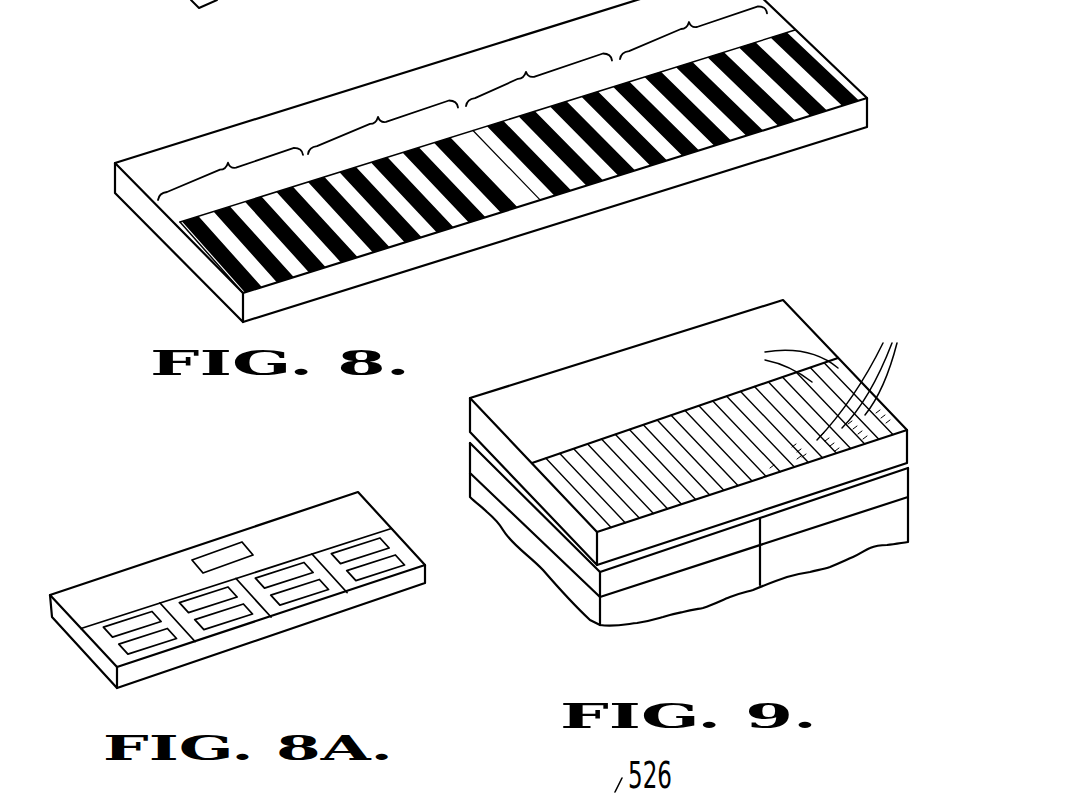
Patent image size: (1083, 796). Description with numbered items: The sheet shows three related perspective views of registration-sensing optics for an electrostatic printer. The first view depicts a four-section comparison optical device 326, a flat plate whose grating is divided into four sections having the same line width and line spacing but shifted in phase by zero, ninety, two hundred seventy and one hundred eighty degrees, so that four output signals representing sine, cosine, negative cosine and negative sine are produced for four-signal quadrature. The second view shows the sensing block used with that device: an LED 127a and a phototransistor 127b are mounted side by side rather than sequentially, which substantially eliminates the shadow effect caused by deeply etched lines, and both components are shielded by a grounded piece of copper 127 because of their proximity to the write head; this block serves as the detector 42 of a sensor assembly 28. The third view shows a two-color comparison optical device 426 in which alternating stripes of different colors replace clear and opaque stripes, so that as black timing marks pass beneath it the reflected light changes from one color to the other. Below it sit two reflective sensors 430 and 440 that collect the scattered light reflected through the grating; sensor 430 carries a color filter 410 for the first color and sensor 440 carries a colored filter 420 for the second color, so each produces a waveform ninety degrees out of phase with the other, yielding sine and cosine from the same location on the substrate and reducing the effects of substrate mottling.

In FIG. 8, the comparison optical device 326 is at (420, 68).
In FIG. 8A, the detector 42 is at (212, 540).
In FIG. 8A, the piece of copper 127 is at (228, 594).
In FIG. 8A, the LED 127a is at (128, 648).
In FIG. 8A, the phototransistor 127b is at (113, 630).
In FIG. 9, the comparison optical device 426 is at (653, 340).
In FIG. 9, the sensor assembly 28 is at (706, 564).
In FIG. 9, the color filter 410 is at (620, 585).
In FIG. 9, the colored filter 420 is at (706, 578).
In FIG. 9, the reflective sensor 430 is at (662, 612).
In FIG. 9, the reflective sensor 440 is at (825, 567).